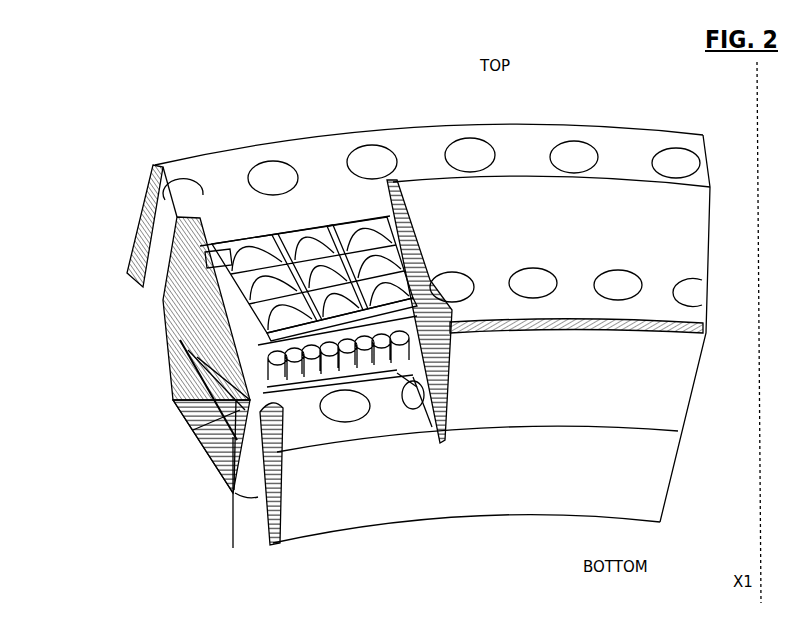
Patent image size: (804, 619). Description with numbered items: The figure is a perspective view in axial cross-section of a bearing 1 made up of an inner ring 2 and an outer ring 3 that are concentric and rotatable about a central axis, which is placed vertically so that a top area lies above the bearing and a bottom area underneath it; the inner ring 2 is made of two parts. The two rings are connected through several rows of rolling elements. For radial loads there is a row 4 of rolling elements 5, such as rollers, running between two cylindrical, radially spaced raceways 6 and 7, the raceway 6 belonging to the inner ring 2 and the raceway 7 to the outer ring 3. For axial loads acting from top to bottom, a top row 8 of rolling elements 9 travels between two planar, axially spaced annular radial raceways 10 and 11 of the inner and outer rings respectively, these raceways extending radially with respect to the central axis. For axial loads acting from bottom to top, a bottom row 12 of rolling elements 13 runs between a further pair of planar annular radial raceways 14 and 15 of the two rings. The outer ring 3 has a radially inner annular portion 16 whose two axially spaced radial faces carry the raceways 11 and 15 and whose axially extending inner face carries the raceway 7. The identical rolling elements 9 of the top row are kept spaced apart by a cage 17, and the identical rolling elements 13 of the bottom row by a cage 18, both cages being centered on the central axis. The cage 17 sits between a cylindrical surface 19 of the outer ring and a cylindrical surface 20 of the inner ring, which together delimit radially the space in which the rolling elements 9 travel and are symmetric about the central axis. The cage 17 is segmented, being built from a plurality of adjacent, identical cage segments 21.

The bearing 1 is at (146, 132).
The inner ring 2 is at (638, 347).
The outer ring 3 is at (623, 150).
The row of rolling elements 4 is at (320, 367).
The rolling elements 5 is at (390, 385).
The raceway 6 is at (418, 385).
The raceway 7 is at (192, 432).
The top row of rolling elements 8 is at (287, 286).
The rolling elements 9 is at (302, 240).
The annular radial raceway 10 is at (353, 263).
The annular radial raceway 11 is at (248, 317).
The bottom row of rolling elements 12 is at (173, 403).
The rolling elements 13 is at (200, 366).
The annular radial raceway 14 is at (234, 493).
The annular radial raceway 15 is at (202, 391).
The radially inner annular portion 16 is at (185, 342).
The cage 17 is at (334, 218).
The cage 18 is at (205, 437).
The cylindrical surface 19 is at (215, 266).
The cylindrical surface 20 is at (398, 378).
The cage segments 21 is at (167, 303).